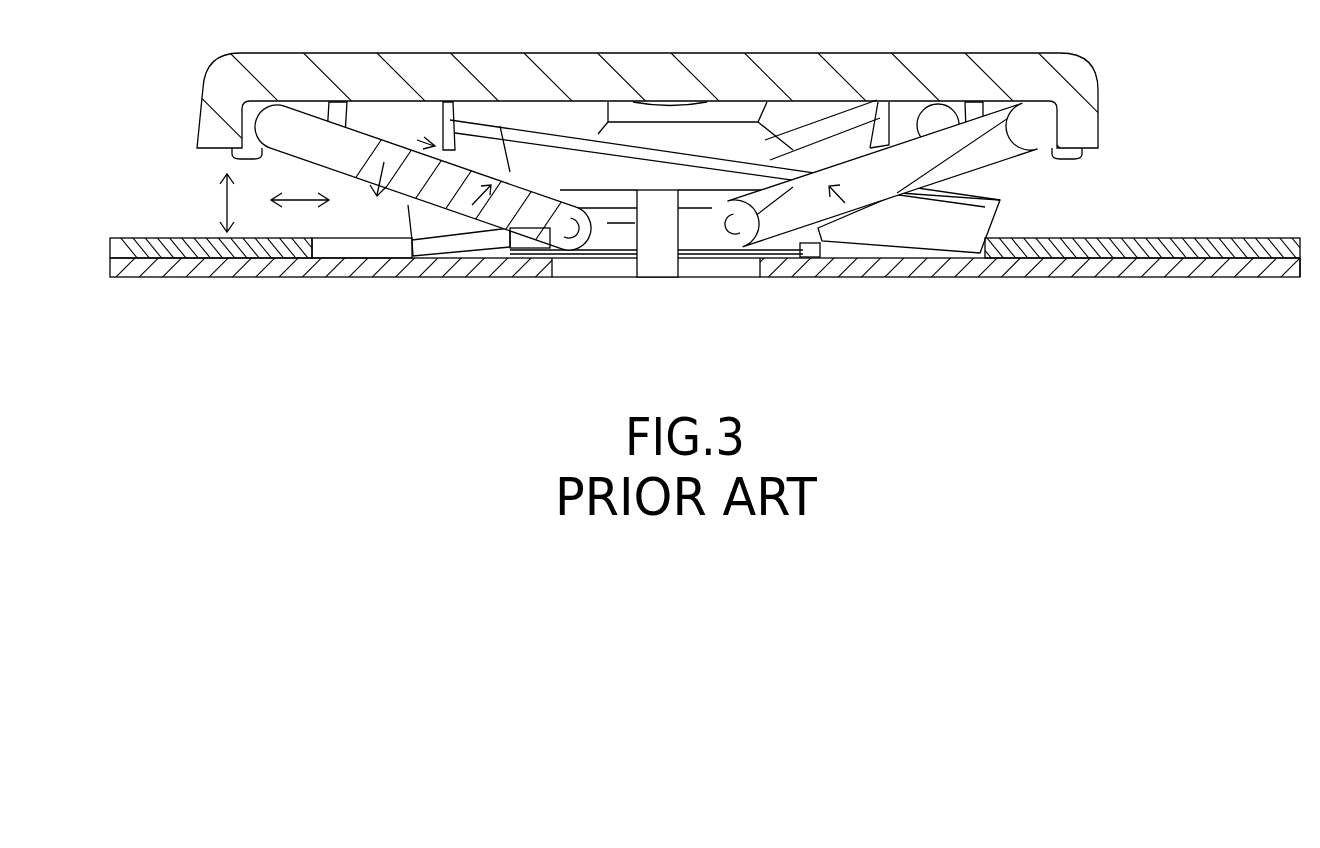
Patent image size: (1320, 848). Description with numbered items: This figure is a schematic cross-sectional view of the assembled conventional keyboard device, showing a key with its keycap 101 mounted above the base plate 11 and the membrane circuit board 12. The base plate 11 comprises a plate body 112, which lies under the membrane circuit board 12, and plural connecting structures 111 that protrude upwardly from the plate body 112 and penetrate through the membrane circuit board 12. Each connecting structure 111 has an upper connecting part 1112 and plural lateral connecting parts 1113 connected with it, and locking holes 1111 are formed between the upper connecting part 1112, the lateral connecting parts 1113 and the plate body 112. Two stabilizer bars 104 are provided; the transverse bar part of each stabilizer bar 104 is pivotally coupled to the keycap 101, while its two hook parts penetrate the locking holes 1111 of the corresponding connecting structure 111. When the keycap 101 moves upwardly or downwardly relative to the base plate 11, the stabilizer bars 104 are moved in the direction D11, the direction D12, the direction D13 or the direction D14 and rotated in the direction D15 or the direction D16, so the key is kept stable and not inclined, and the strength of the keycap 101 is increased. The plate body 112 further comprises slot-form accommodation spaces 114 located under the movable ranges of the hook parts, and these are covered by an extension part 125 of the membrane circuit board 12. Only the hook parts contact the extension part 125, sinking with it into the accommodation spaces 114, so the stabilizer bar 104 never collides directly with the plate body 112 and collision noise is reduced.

The keycap 101 is at (674, 70).
The base plate 11 is at (171, 262).
The membrane circuit board 12 is at (150, 250).
The connecting structure 111 is at (1220, 193).
The locking hole 1111 is at (600, 258).
The upper connecting part 1112 is at (600, 195).
The lateral connecting part 1113 is at (530, 243).
The stabilizer bar 104 is at (422, 192).
The accommodation space 114 is at (583, 266).
The extension part 125 is at (797, 260).
The plate body 112 is at (1167, 265).
The direction D11 is at (324, 217).
The direction D12 is at (282, 182).
The direction D13 is at (198, 180).
The direction D14 is at (198, 221).
The direction D15 is at (416, 127).
The direction D16 is at (378, 195).